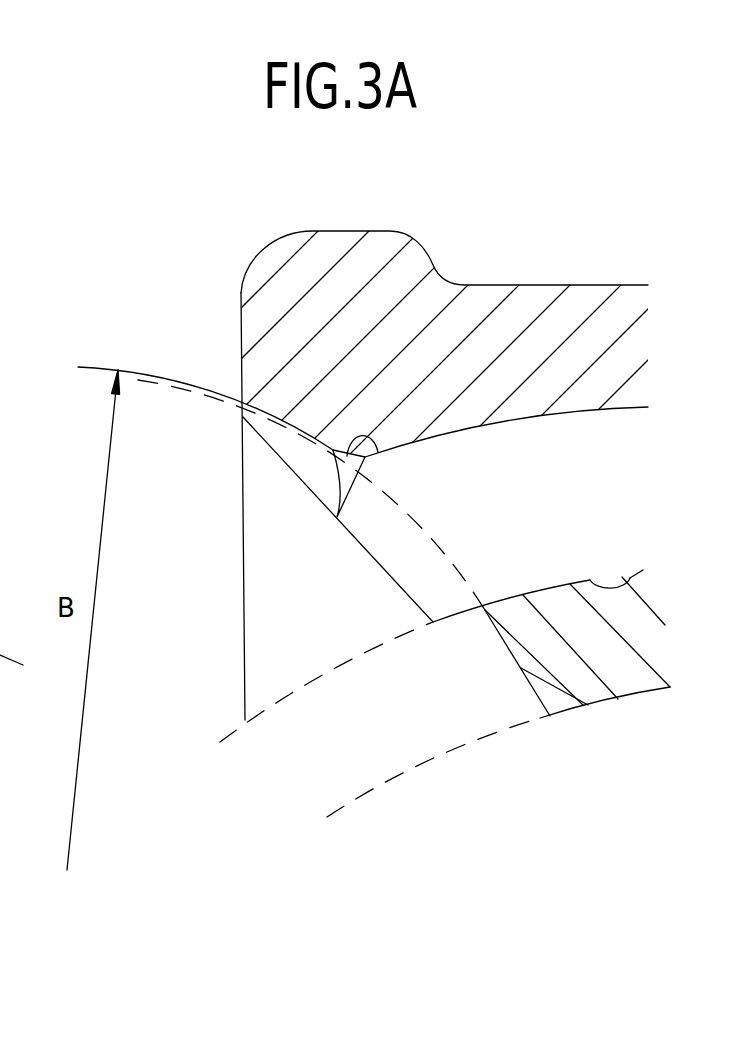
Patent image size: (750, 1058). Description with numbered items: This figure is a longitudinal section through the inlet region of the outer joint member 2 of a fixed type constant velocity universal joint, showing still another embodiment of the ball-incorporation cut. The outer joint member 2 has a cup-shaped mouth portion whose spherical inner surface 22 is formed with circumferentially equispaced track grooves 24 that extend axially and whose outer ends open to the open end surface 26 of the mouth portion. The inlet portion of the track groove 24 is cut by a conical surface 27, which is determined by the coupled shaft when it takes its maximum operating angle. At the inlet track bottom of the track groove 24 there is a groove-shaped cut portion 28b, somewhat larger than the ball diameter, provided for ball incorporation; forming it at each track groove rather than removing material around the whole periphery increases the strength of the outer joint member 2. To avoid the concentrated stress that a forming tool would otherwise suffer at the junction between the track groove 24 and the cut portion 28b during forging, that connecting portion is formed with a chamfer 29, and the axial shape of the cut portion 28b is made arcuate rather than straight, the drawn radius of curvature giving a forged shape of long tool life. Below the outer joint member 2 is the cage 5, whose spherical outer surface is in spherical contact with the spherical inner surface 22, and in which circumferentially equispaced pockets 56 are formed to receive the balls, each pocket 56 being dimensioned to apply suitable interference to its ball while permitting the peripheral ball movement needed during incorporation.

The outer joint member 2 is at (540, 298).
The open end surface 26 is at (241, 340).
The cut portion 28b is at (290, 460).
The conical surface 27 is at (393, 578).
The chamfer 29 is at (380, 450).
The track groove 24 is at (561, 505).
The spherical inner surface 22 is at (633, 574).
The cage 5 is at (622, 673).
The pocket 56 is at (523, 670).